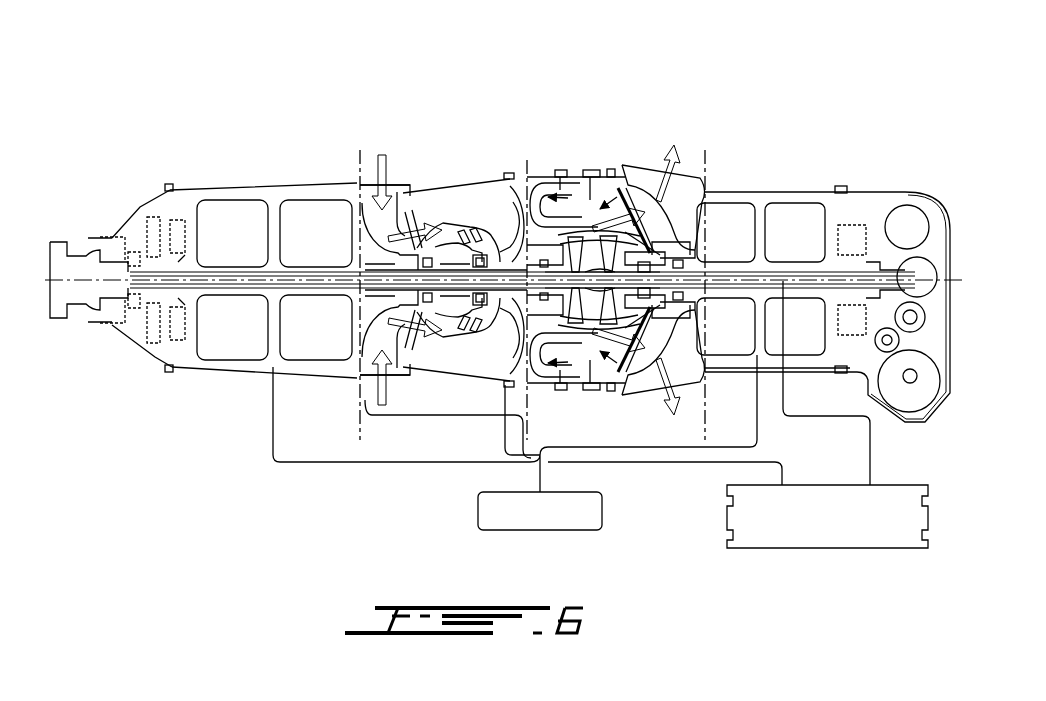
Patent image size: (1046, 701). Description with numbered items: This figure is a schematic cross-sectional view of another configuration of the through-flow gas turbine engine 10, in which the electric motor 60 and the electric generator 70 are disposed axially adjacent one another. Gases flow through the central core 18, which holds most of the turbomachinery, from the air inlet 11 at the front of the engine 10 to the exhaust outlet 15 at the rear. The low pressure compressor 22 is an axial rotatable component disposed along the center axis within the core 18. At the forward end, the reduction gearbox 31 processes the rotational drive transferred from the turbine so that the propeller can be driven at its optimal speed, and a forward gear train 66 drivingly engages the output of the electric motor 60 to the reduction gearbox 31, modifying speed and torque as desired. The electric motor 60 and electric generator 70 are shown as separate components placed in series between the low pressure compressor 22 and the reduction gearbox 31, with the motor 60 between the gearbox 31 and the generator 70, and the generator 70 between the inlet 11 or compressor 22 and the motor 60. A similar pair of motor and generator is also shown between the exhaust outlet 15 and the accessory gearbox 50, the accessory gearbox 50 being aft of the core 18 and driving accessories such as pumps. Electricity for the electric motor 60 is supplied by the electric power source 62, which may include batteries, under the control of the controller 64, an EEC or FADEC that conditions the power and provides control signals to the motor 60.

The gas turbine engine 10 is at (327, 96).
The air inlet 11 is at (365, 180).
The exhaust outlet 15 is at (638, 187).
The central core 18 is at (527, 458).
The low pressure compressor 22 is at (444, 222).
The reduction gearbox 31 is at (132, 206).
The accessory gearbox 50 is at (906, 382).
The electric motor 60 is at (225, 188).
The electric power source 62 is at (827, 550).
The controller 64 is at (537, 532).
The forward gear train 66 is at (185, 330).
The electric generator 70 is at (300, 187).